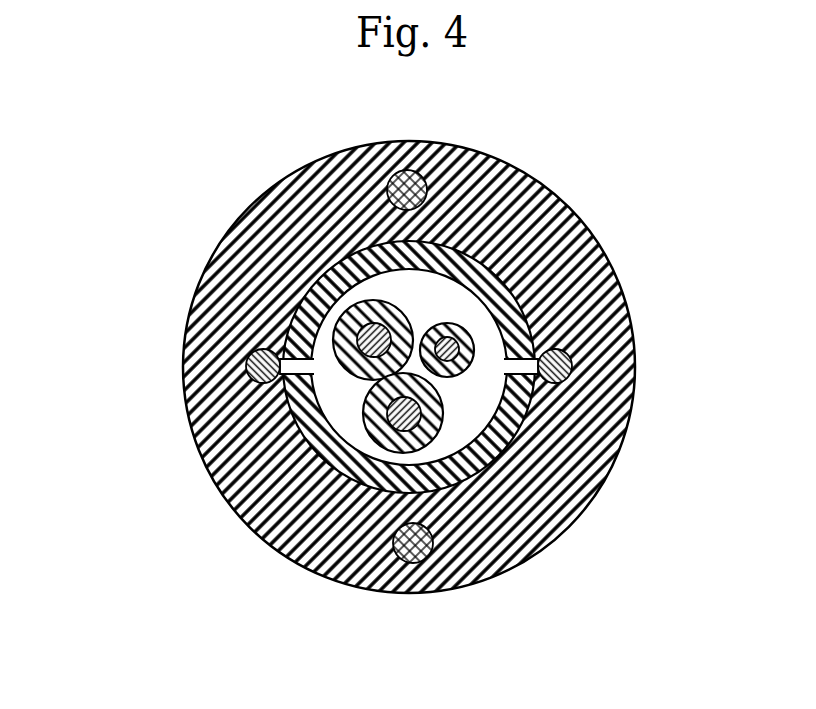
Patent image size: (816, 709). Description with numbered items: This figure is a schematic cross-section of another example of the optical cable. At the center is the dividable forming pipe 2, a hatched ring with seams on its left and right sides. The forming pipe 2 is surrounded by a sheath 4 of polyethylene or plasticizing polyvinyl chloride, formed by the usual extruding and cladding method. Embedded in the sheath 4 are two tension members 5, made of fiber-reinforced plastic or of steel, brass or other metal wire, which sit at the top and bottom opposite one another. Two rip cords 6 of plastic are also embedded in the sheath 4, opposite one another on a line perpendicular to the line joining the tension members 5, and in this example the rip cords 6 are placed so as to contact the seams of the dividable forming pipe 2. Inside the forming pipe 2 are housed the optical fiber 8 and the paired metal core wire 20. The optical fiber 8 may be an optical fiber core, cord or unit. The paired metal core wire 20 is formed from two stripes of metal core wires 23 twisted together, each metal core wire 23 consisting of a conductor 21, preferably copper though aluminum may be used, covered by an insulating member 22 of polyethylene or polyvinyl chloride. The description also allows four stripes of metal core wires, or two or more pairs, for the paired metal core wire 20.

The forming pipe 2 is at (317, 273).
The sheath 4 is at (545, 202).
The tension members 5 is at (395, 168).
The rip cords 6 is at (255, 376).
The optical fiber 8 is at (463, 373).
The paired metal core wire 20 is at (342, 379).
The conductor 21 is at (357, 330).
The insulating member 22 is at (337, 311).
The metal core wires 23 is at (255, 427).